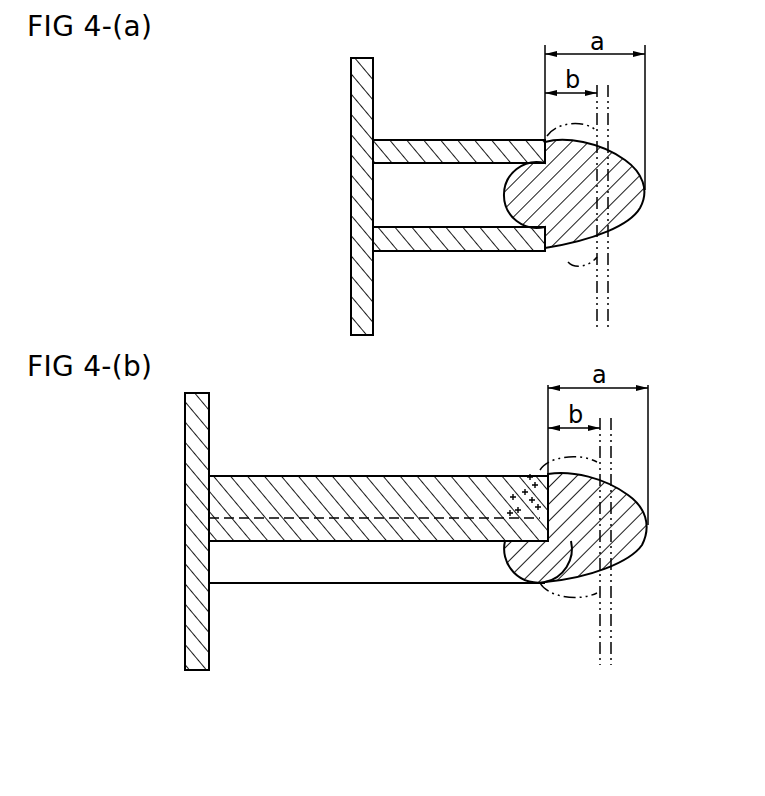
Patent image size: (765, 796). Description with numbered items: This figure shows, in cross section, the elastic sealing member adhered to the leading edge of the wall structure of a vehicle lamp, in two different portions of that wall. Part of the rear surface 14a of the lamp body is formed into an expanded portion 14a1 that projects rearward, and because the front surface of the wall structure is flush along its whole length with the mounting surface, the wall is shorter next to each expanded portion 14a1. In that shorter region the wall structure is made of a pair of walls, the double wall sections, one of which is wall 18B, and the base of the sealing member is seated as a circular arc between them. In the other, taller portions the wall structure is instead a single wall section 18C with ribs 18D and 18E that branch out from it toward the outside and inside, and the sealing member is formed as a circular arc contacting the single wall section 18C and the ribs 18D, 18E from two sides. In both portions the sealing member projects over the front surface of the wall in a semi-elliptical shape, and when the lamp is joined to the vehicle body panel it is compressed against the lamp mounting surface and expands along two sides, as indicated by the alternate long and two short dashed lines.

The expanded portion 14a1 is at (374, 294).
The rear surface 14a is at (208, 441).
The wall 18B is at (440, 236).
The single wall section 18C is at (318, 532).
The rib 18D is at (365, 566).
The rib 18E is at (366, 503).